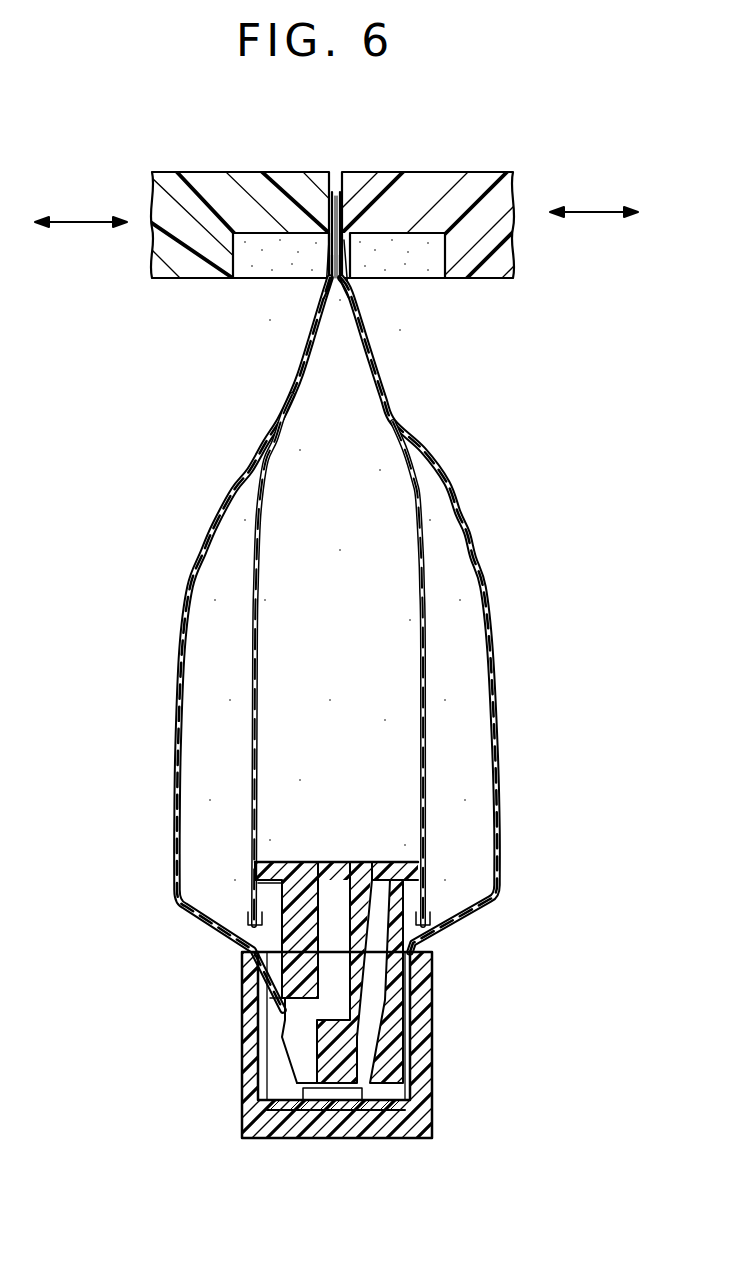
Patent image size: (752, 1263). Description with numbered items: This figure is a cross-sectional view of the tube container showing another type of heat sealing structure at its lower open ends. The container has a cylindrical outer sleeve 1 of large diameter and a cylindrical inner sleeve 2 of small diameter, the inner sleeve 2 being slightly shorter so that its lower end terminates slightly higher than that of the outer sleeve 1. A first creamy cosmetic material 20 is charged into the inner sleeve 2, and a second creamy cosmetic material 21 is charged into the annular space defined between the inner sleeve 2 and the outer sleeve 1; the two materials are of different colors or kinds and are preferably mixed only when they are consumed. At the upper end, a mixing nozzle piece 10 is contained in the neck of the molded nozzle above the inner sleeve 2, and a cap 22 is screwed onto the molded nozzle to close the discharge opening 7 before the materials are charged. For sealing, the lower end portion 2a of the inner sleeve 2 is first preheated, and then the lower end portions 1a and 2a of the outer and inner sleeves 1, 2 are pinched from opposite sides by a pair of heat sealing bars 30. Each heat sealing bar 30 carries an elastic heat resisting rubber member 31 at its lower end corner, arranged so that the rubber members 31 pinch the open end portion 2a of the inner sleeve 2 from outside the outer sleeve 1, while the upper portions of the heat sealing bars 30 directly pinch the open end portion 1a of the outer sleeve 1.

The outer sleeve 1 is at (487, 587).
The lower end portion of the outer sleeve 1a is at (342, 197).
The inner sleeve 2 is at (423, 665).
The lower end portion of the inner sleeve 2a is at (345, 268).
The discharge opening 7 is at (430, 1113).
The mixing nozzle piece 10 is at (370, 1047).
The first creamy cosmetic material 20 is at (387, 765).
The second creamy cosmetic material 21 is at (462, 805).
The cap 22 is at (432, 993).
The heat sealing bars 30 is at (230, 178).
The elastic heat resisting rubber member 31 is at (270, 262).